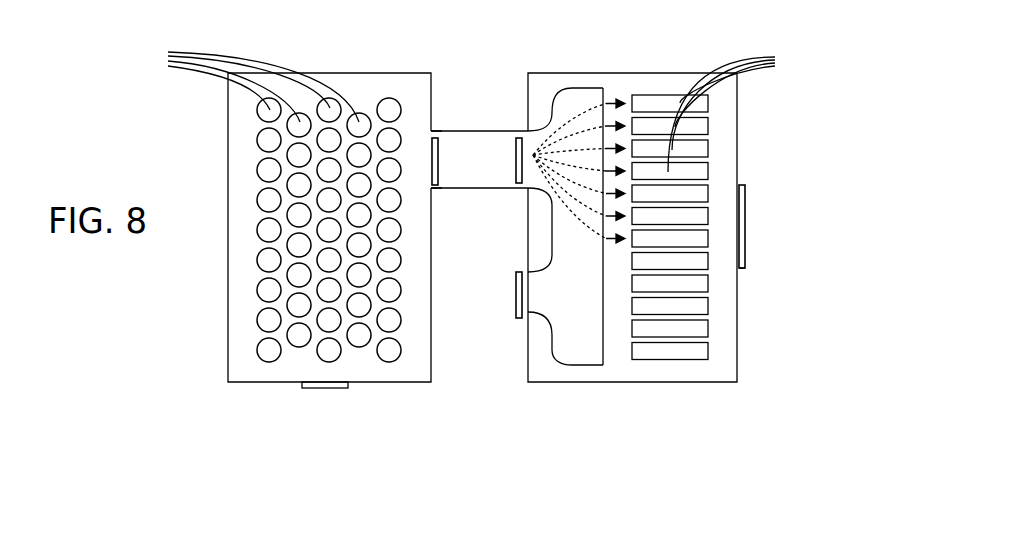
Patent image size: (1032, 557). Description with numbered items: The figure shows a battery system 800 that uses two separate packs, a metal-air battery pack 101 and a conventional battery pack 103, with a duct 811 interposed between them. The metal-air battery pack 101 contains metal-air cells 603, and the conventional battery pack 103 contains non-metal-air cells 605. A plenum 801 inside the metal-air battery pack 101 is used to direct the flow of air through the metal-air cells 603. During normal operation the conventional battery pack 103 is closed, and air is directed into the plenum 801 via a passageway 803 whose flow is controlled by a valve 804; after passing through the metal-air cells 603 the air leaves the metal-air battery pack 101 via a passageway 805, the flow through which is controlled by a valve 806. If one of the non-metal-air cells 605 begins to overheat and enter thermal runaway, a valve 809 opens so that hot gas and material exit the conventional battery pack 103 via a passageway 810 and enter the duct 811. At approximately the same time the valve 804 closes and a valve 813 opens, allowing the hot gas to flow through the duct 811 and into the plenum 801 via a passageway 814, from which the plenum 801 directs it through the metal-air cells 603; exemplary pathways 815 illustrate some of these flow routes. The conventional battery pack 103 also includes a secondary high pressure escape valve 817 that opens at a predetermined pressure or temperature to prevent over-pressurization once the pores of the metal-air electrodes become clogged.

The system 800 is at (788, 413).
The metal-air battery pack 101 is at (618, 73).
The conventional battery pack 103 is at (378, 73).
The metal-air cells 603 is at (746, 112).
The non-metal-air cells 605 is at (239, 84).
The plenum 801 is at (588, 352).
The passageway 803 is at (538, 306).
The valve 804 is at (515, 298).
The passageway 805 is at (736, 202).
The valve 806 is at (748, 262).
The valve 809 is at (438, 152).
The passageway 810 is at (426, 146).
The duct 811 is at (468, 131).
The valve 813 is at (516, 172).
The passageway 814 is at (529, 170).
The exemplary pathways 815 is at (568, 96).
The secondary high pressure escape valve 817 is at (318, 390).